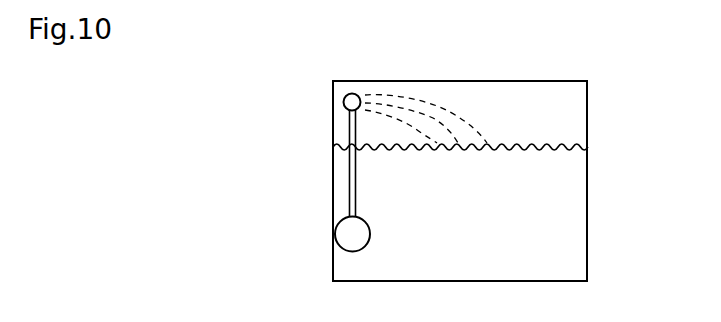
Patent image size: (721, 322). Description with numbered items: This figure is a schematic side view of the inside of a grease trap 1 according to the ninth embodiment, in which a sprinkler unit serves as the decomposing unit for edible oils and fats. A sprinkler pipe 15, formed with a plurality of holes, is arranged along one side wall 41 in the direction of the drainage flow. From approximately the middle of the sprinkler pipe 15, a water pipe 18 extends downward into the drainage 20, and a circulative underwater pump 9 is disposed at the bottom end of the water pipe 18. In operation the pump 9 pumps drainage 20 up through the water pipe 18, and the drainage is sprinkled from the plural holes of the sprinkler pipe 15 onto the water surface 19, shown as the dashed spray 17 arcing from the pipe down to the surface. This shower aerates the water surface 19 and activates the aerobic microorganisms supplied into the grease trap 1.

The grease trap 1 is at (597, 77).
The circulative underwater pump 9 is at (358, 245).
The sprinkler pipe 15 is at (352, 93).
The spray jets (dashed) 17 is at (411, 100).
The water pipe 18 is at (340, 186).
The water surface 19 is at (538, 147).
The drainage 20 is at (573, 227).
The side wall 41 is at (333, 177).